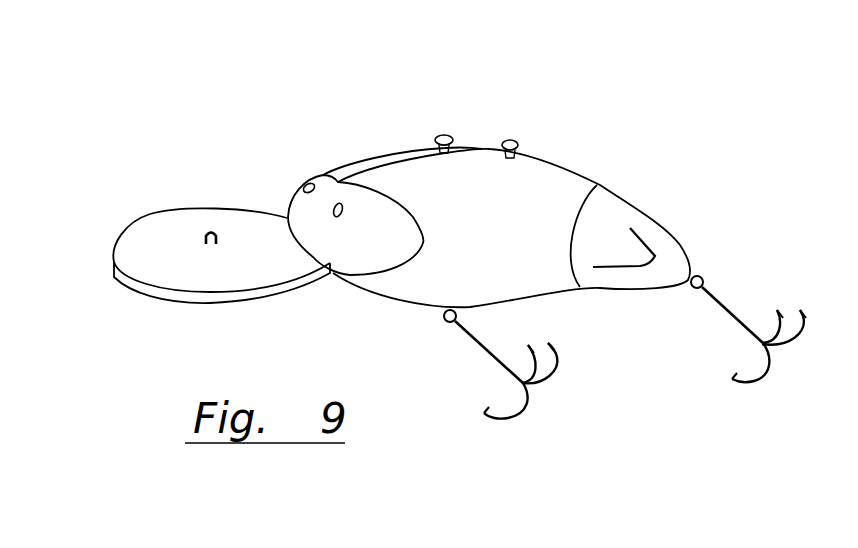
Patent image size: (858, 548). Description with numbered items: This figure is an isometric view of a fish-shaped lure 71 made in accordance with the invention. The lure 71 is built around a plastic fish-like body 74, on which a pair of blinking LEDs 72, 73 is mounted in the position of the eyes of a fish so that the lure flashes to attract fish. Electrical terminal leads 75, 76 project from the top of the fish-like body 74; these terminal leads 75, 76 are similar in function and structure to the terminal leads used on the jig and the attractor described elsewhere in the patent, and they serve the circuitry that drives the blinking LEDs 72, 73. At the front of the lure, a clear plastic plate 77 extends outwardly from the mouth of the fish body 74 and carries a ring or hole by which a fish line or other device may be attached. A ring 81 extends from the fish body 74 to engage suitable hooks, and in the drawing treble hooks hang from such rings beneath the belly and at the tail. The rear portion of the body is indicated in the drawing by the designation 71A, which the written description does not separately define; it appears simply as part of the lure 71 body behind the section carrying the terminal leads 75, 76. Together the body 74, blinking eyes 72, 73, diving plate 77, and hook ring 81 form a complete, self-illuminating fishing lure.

The lure 71 is at (489, 183).
The rear body section 71A is at (612, 199).
The blinking LED 72 is at (271, 159).
The blinking LED 73 is at (285, 153).
The plastic fish-like body 74 is at (374, 114).
The terminal lead 75 is at (544, 123).
The terminal lead 76 is at (292, 160).
The clear plastic plate 77 is at (218, 236).
The ring 81 is at (591, 323).